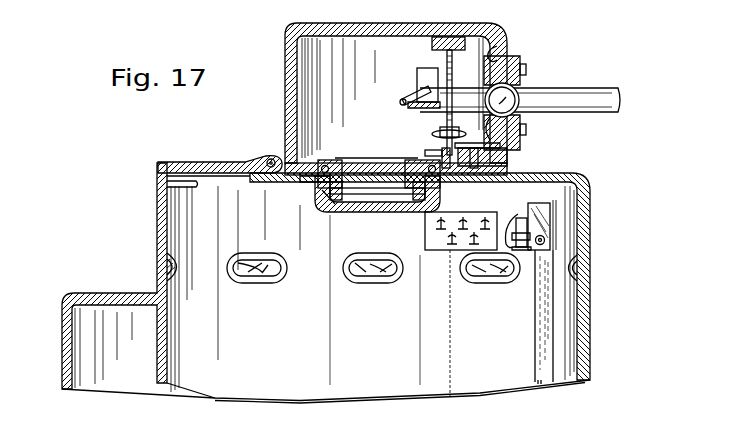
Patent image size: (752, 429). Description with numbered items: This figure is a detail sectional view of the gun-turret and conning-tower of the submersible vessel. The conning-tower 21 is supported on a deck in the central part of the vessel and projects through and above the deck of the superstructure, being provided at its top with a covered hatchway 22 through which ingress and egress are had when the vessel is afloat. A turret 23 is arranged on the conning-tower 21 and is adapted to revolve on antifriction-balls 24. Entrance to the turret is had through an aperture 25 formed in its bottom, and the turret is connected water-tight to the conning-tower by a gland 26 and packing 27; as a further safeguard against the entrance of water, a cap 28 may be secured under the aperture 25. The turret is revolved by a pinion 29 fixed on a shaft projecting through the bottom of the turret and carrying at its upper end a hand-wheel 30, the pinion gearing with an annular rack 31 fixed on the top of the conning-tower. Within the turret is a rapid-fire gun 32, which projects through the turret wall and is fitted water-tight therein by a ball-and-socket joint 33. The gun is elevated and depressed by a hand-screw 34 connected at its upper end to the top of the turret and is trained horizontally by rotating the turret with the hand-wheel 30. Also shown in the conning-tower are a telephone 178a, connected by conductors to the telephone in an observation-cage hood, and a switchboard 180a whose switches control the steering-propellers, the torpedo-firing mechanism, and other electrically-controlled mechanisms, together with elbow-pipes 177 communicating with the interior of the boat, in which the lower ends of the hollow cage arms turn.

The conning-tower 21 is at (157, 218).
The covered hatchway 22 is at (226, 167).
The turret 23 is at (286, 75).
The antifriction-balls 24 is at (326, 164).
The aperture 25 is at (377, 179).
The gland 26 is at (326, 200).
The packing 27 is at (316, 181).
The cap 28 is at (392, 214).
The pinion 29 is at (474, 176).
The hand-wheel 30 is at (500, 146).
The annular rack 31 is at (460, 176).
The rapid-fire gun 32 is at (520, 100).
The ball-and-socket joint 33 is at (506, 97).
The hand-screw 34 is at (452, 74).
The elbow-pipes 177 is at (536, 332).
The telephone 178a is at (553, 203).
The switchboard 180a is at (437, 250).